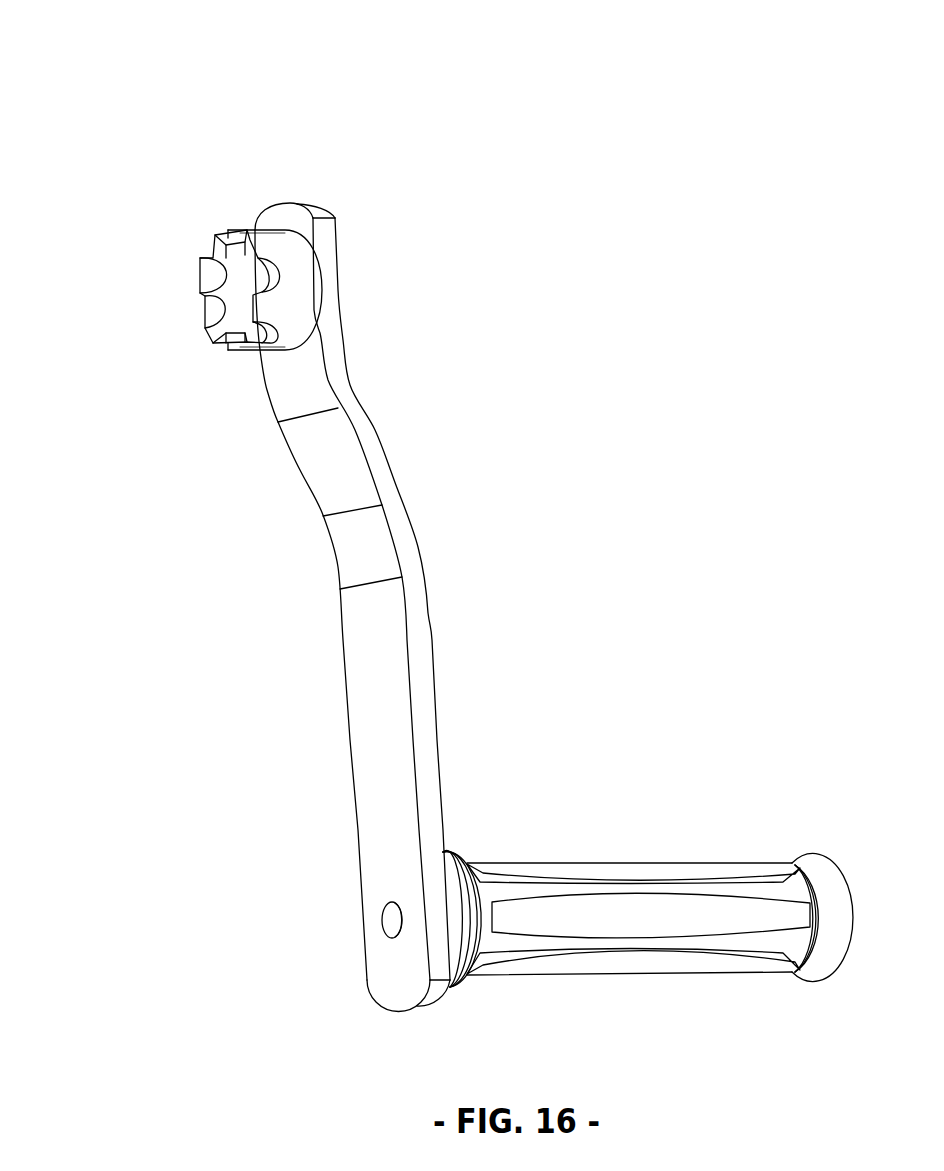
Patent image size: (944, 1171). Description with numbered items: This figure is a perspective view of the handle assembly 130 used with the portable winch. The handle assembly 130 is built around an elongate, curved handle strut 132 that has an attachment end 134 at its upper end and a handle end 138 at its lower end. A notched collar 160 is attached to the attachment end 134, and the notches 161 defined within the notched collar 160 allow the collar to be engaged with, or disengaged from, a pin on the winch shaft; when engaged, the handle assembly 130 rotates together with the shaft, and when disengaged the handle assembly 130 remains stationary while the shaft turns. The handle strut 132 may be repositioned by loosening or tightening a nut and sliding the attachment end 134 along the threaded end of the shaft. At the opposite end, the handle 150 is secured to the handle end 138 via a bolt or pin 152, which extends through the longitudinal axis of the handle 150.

The handle assembly 130 is at (180, 130).
The handle strut 132 is at (380, 545).
The attachment end 134 is at (345, 280).
The handle end 138 is at (377, 895).
The handle 150 is at (623, 875).
The bolt or pin 152 is at (387, 920).
The notched collar 160 is at (278, 247).
The notches 161 is at (262, 335).